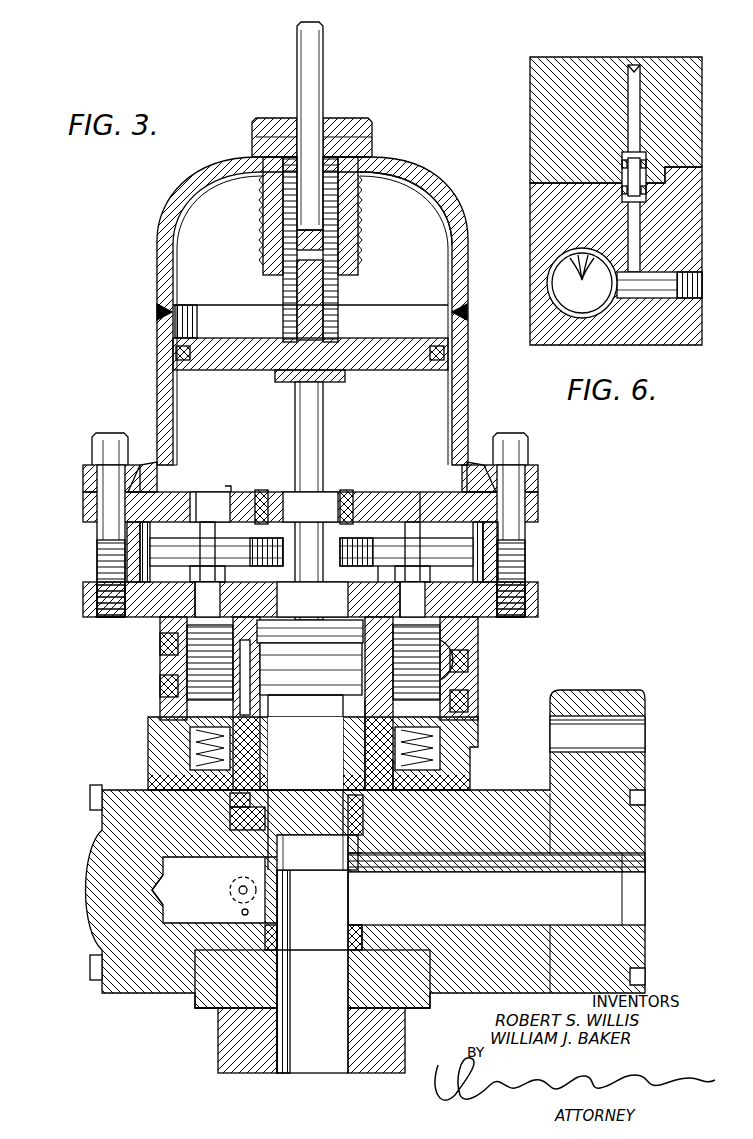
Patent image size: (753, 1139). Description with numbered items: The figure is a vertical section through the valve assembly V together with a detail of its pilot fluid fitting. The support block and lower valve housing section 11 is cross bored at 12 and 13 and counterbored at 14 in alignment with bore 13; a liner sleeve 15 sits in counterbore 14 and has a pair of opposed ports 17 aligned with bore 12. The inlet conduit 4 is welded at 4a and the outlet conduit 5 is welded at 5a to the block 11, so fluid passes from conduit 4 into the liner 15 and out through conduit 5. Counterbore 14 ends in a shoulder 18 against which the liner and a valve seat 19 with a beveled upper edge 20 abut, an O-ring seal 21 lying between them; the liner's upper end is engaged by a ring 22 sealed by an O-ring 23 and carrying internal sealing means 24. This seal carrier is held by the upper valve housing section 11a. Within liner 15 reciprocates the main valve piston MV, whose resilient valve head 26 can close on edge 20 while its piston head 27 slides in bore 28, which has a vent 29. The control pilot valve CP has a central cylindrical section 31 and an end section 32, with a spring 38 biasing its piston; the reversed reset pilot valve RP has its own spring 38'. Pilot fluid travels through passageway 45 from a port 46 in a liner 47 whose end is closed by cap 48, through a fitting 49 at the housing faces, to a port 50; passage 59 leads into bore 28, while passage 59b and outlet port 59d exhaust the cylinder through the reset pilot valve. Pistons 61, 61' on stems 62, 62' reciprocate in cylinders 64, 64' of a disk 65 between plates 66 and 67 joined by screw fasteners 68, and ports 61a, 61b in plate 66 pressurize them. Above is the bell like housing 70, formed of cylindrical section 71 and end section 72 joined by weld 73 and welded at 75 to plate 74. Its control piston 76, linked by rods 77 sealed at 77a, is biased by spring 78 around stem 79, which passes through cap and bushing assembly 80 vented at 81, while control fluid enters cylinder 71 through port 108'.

In FIG. 3, the inlet conduit 4 is at (550, 930).
In FIG. 3, the weld 4a is at (440, 795).
In FIG. 3, the outlet conduit 5 is at (218, 1050).
In FIG. 3, the weld 5a is at (218, 1008).
In FIG. 3, the support block and lower valve housing section 11 is at (415, 993).
In FIG. 6, the support block and lower valve housing section 11 is at (650, 345).
In FIG. 3, the upper valve housing section 11a is at (460, 725).
In FIG. 6, the upper valve housing section 11a is at (530, 85).
In FIG. 3, the bore 12 is at (405, 895).
In FIG. 3, the bore 13 is at (333, 965).
In FIG. 3, the counterbore 14 is at (362, 855).
In FIG. 3, the liner sleeve 15 is at (366, 935).
In FIG. 3, the ports 17 is at (355, 885).
In FIG. 3, the shoulder 18 is at (285, 940).
In FIG. 3, the valve seat 19 is at (332, 950).
In FIG. 3, the beveled upper edge 20 is at (352, 925).
In FIG. 3, the O-ring seal 21 is at (262, 945).
In FIG. 3, the ring 22 is at (365, 828).
In FIG. 3, the O-ring 23 is at (358, 850).
In FIG. 3, the internal annular sealing means 24 is at (240, 820).
In FIG. 3, the resilient valve head 26 is at (318, 840).
In FIG. 3, the piston head 27 is at (304, 690).
In FIG. 3, the bore 28 is at (365, 770).
In FIG. 3, the vent 29 is at (360, 790).
In FIG. 3, the central cylindrical section 31 is at (190, 663).
In FIG. 3, the end section 32 is at (190, 640).
In FIG. 3, the spring 38 is at (166, 748).
In FIG. 3, the spring 38' is at (458, 748).
In FIG. 3, the passageway 45 is at (250, 715).
In FIG. 6, the passageway 45 is at (628, 105).
In FIG. 3, the port 46 is at (235, 883).
In FIG. 6, the port 46 is at (582, 283).
In FIG. 3, the liner 47 is at (190, 930).
In FIG. 6, the liner 47 is at (548, 265).
In FIG. 3, the closure cap 48 is at (93, 795).
In FIG. 3, the fitting 49 is at (230, 798).
In FIG. 6, the fitting 49 is at (622, 170).
In FIG. 6, the port 50 is at (640, 72).
In FIG. 3, the port or passage 59 is at (240, 640).
In FIG. 3, the passage 59b is at (375, 720).
In FIG. 3, the outlet port 59d is at (455, 650).
In FIG. 3, the piston 61 is at (216, 557).
In FIG. 3, the piston 61' is at (406, 557).
In FIG. 3, the port 61a is at (200, 500).
In FIG. 3, the port 61b is at (425, 500).
In FIG. 3, the stem 62 is at (172, 599).
In FIG. 3, the stem 62' is at (380, 599).
In FIG. 3, the cylinder 64 is at (103, 552).
In FIG. 3, the cylinder 64' is at (381, 579).
In FIG. 3, the disk 65 is at (498, 537).
In FIG. 3, the plate 66 is at (538, 500).
In FIG. 3, the plate 67 is at (538, 597).
In FIG. 3, the screw fasteners 68 is at (110, 433).
In FIG. 3, the bell like housing 70 is at (157, 219).
In FIG. 3, the cylindrical section 71 is at (173, 363).
In FIG. 3, the end section 72 is at (450, 200).
In FIG. 3, the weld 73 is at (157, 312).
In FIG. 3, the plate 74 is at (146, 465).
In FIG. 3, the weld 75 is at (466, 465).
In FIG. 3, the piston 76 is at (405, 350).
In FIG. 3, the rods 77 is at (295, 405).
In FIG. 3, the sealing means 77a is at (343, 495).
In FIG. 3, the spring 78 is at (340, 293).
In FIG. 3, the upstanding stem 79 is at (297, 72).
In FIG. 3, the threaded cap and bushing assembly 80 is at (360, 208).
In FIG. 3, the vent 81 is at (372, 137).
In FIG. 3, the port 108' is at (254, 463).
In FIG. 3, the control pilot valve CP is at (185, 695).
In FIG. 3, the reset pilot valve RP is at (445, 680).
In FIG. 3, the main valve piston MV is at (312, 823).
In FIG. 3, the valve assembly V is at (108, 272).